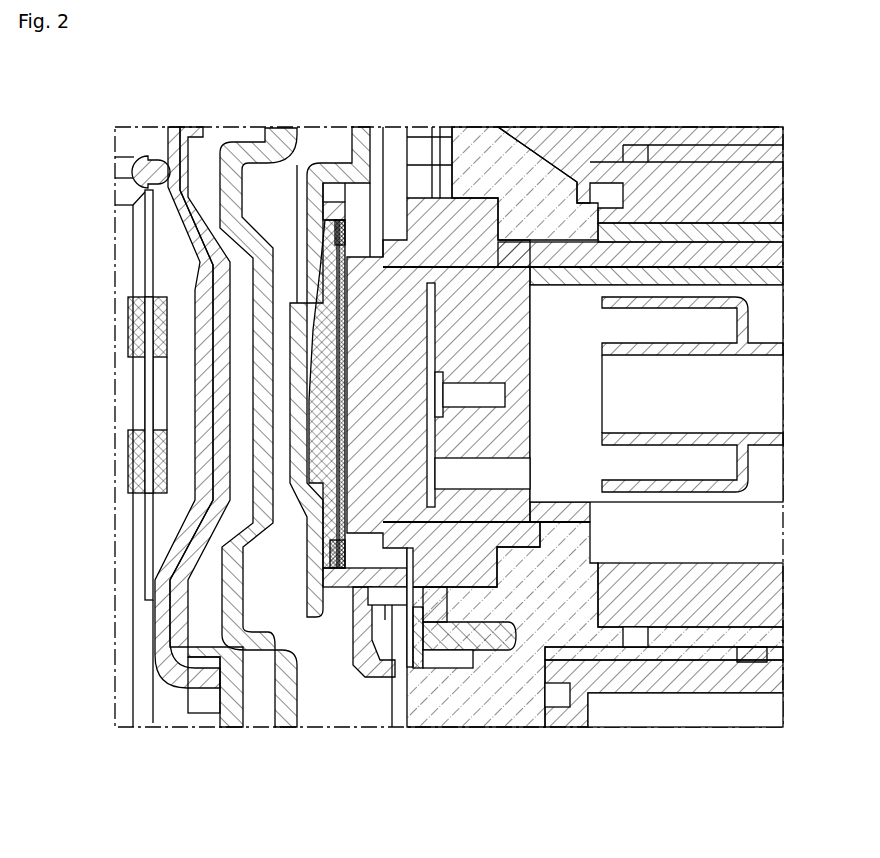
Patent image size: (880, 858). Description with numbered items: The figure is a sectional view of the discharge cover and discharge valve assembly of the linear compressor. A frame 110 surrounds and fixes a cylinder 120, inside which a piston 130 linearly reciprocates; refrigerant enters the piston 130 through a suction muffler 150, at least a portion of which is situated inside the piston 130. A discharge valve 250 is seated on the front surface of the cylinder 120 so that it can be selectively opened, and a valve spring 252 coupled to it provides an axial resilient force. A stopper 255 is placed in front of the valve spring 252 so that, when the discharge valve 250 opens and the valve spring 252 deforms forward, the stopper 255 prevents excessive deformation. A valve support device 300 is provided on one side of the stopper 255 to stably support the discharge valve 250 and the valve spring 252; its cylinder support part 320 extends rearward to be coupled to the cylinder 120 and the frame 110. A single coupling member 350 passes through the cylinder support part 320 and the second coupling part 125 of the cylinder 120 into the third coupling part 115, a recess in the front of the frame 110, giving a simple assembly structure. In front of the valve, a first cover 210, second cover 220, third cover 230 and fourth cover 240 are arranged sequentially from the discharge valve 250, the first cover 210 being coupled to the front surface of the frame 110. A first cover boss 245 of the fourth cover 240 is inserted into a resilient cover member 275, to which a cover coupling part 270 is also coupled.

The frame 110 is at (528, 165).
The third coupling part 115 is at (590, 587).
The cylinder 120 is at (767, 253).
The second coupling part 125 is at (460, 668).
The piston 130 is at (767, 277).
The suction muffler 150 is at (767, 347).
The first cover 210 is at (337, 625).
The second cover 220 is at (232, 575).
The third cover 230 is at (177, 640).
The fourth cover 240 is at (160, 613).
The first cover boss 245 is at (134, 165).
The discharge valve 250 is at (355, 290).
The valve spring 252 is at (346, 243).
The stopper 255 is at (323, 300).
The cover coupling part 270 is at (135, 462).
The resilient cover member 275 is at (149, 515).
The valve support device 300 is at (385, 615).
The cylinder support part 320 is at (435, 668).
The coupling member 350 is at (447, 668).